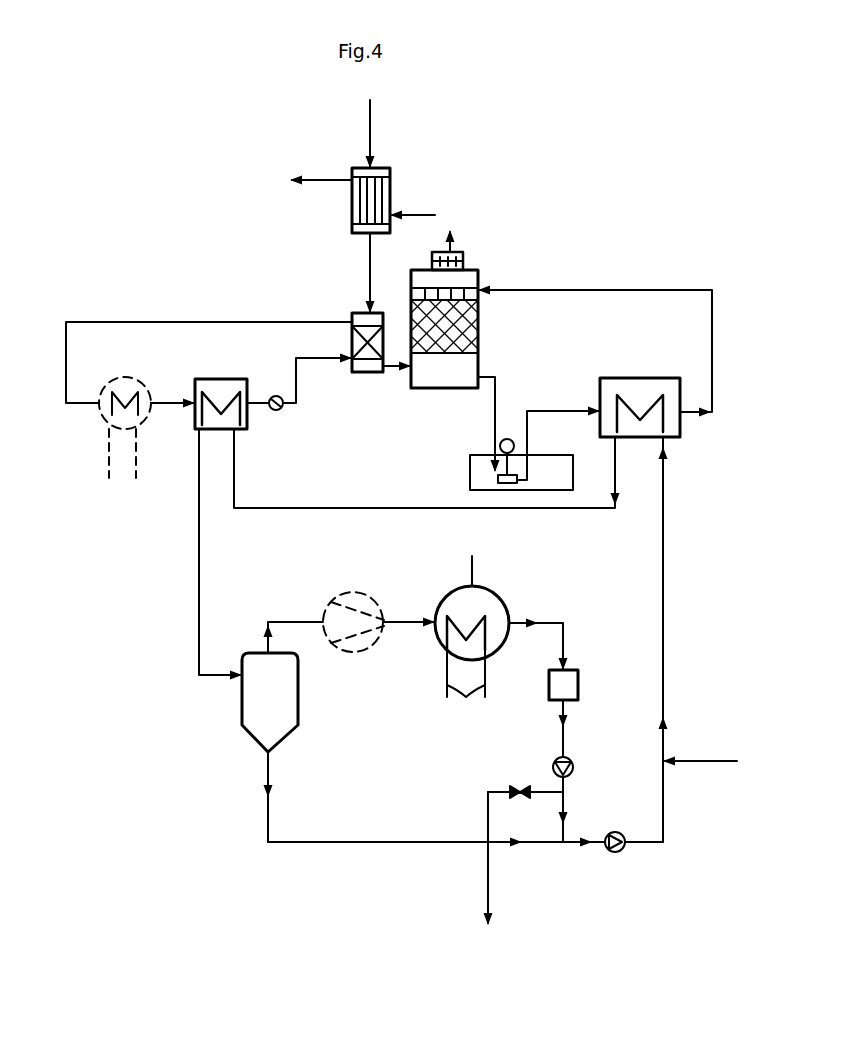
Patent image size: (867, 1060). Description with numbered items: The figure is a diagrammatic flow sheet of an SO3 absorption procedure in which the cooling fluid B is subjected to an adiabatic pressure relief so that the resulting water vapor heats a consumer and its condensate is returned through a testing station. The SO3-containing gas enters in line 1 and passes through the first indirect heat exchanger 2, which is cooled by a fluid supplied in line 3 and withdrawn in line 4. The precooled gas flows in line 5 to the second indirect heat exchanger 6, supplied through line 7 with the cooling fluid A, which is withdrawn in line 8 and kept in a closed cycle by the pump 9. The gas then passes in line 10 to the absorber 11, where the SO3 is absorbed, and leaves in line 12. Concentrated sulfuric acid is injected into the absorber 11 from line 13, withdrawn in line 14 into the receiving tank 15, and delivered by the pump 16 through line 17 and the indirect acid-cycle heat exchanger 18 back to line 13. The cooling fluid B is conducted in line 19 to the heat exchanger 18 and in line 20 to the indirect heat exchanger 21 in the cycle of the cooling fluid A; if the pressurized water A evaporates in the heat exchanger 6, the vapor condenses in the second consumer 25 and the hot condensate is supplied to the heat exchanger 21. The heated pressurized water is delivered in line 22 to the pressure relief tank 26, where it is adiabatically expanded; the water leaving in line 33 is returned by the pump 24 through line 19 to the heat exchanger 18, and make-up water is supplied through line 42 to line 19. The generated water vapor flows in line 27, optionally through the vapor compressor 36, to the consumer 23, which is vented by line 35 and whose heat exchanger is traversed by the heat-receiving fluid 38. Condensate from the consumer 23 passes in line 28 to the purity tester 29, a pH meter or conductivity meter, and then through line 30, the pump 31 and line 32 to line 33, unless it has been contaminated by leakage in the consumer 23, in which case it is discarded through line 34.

The line 1 is at (374, 130).
The first indirect heat exchanger 2 is at (381, 200).
The line 3 is at (417, 205).
The line 4 is at (315, 178).
The line 5 is at (373, 272).
The second indirect heat exchanger 6 is at (380, 338).
The line 7 is at (318, 362).
The line 8 is at (314, 320).
The pump 9 is at (280, 411).
The line 10 is at (389, 375).
The absorber 11 is at (470, 334).
The line 12 is at (453, 240).
The line 13 is at (537, 288).
The line 14 is at (498, 393).
The receiving tank 15 is at (575, 472).
The pump 16 is at (516, 446).
The line 17 is at (568, 406).
The indirect acid-cycle heat exchanger 18 is at (655, 388).
The line 19 is at (668, 502).
The line 20 is at (618, 500).
The indirect heat exchanger 21 is at (228, 376).
The line 22 is at (197, 488).
The consumer 23 is at (500, 598).
The pump 24 is at (617, 856).
The second consumer 25 is at (100, 415).
The pressure relief tank 26 is at (242, 712).
The line 27 is at (291, 618).
The line 28 is at (565, 637).
The purity tester 29 is at (580, 688).
The line 30 is at (566, 738).
The pump 31 is at (575, 768).
The line 32 is at (566, 810).
The line 33 is at (328, 845).
The line 34 is at (485, 878).
The line 35 is at (475, 572).
The vapor compressor 36 is at (354, 652).
The heat-receiving fluid 38 is at (466, 688).
The line 42 is at (712, 767).
The cooling fluid A is at (216, 320).
The cooling fluid B is at (665, 672).